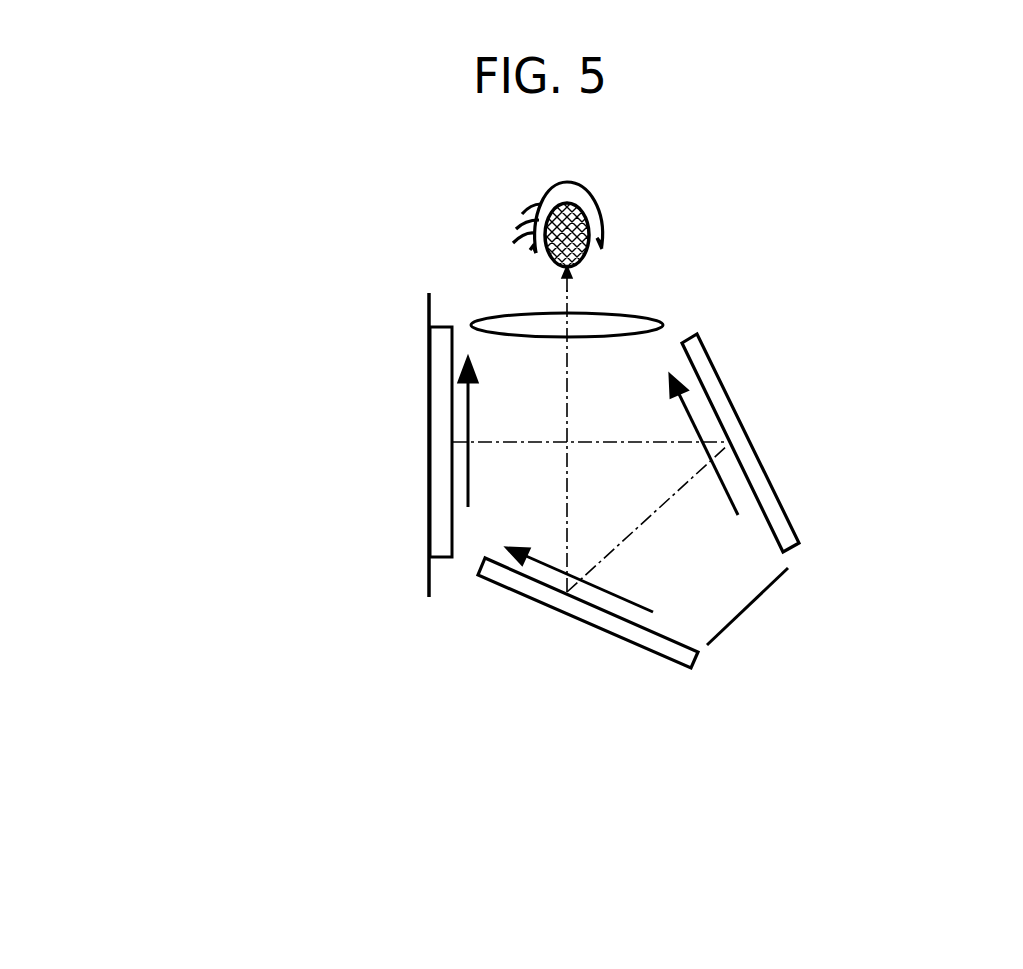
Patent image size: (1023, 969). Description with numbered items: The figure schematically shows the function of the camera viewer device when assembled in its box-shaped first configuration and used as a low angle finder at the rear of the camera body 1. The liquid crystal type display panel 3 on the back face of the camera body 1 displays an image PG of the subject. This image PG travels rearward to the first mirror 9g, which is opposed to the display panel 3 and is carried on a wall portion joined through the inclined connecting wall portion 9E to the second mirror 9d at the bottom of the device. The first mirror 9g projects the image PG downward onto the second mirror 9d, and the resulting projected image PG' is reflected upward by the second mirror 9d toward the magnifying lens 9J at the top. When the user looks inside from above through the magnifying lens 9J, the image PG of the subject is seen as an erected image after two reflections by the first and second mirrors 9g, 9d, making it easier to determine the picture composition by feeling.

The camera body 1 is at (421, 583).
The liquid crystal type display panel 3 is at (440, 489).
The magnifying lens 9J is at (642, 313).
The first mirror 9g is at (766, 462).
The second mirror 9d is at (641, 650).
The connecting wall portion 9E is at (744, 610).
The image of the subject PG is at (569, 435).
The projected image PG' is at (580, 598).